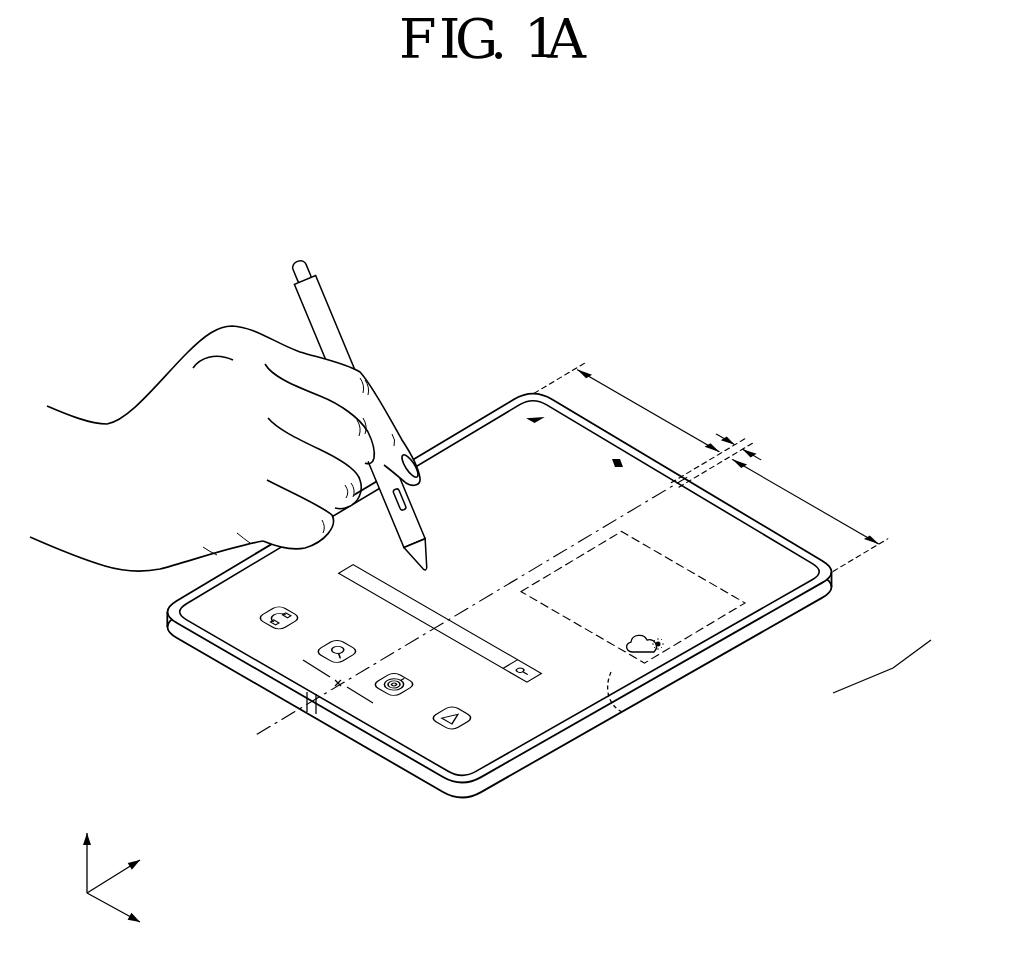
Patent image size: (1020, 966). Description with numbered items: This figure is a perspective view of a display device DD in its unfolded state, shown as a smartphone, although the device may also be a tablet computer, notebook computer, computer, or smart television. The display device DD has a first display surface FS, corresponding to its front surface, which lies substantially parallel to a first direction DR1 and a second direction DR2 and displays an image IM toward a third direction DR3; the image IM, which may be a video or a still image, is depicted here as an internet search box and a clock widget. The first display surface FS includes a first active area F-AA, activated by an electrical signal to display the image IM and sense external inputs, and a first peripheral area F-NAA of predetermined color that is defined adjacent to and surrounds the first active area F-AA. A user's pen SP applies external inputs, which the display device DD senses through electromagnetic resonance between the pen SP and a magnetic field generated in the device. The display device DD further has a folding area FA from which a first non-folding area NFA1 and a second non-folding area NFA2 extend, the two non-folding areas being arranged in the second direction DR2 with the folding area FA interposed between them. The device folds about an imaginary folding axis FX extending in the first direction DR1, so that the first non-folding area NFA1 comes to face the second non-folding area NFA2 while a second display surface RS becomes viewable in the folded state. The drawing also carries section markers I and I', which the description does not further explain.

The display device DD is at (549, 503).
The pen SP is at (336, 320).
The first non-folding area NFA1 is at (631, 420).
The folding area FA is at (713, 460).
The second non-folding area NFA2 is at (787, 513).
The first peripheral area F-NAA is at (782, 601).
The first active area F-AA is at (763, 618).
The image IM is at (687, 640).
The first display surface FS is at (882, 671).
The second display surface RS is at (622, 712).
The section line start I is at (283, 687).
The section line end I' is at (338, 720).
The folding axis FX is at (452, 620).
The first direction DR1 is at (137, 869).
The second direction DR2 is at (138, 918).
The third direction DR3 is at (87, 851).